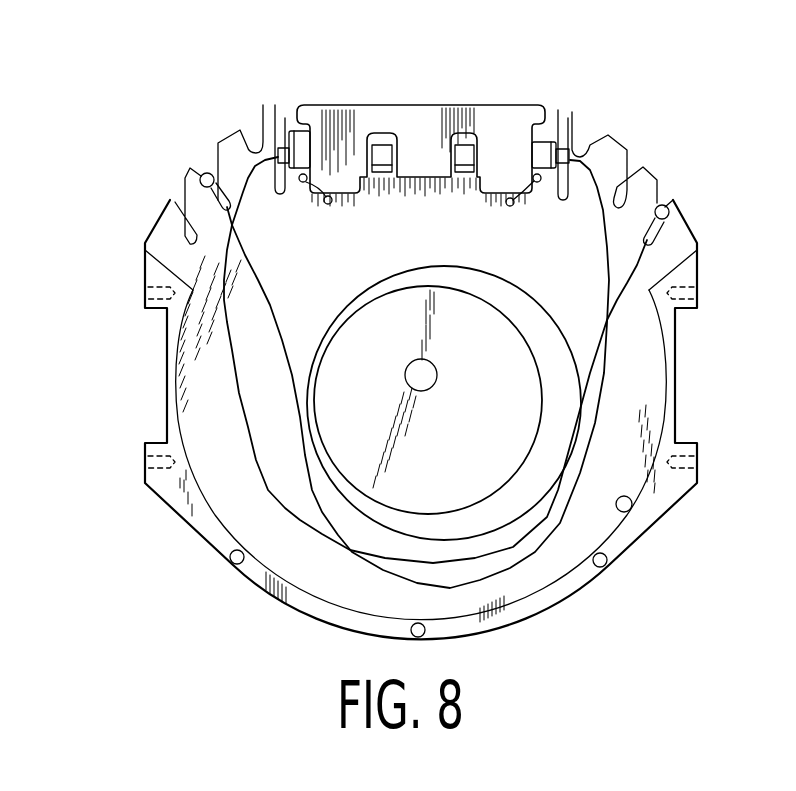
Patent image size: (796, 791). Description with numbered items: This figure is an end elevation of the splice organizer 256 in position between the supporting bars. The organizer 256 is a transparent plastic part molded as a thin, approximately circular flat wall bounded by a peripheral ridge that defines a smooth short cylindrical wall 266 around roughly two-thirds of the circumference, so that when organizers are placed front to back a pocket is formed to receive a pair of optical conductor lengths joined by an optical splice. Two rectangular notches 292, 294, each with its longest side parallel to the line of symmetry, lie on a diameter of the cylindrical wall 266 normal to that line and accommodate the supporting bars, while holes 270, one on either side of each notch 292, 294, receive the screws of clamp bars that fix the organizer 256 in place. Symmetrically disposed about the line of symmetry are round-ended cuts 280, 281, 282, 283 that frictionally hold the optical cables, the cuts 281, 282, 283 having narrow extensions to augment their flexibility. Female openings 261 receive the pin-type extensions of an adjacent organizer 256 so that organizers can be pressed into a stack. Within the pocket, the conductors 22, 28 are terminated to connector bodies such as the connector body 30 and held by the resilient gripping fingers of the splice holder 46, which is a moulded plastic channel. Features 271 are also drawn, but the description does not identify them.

The conductor 22 is at (418, 374).
The conductor 28 is at (597, 212).
The connector body 30 is at (545, 146).
The splice holder 46 is at (468, 106).
The splice organizer 256 is at (240, 621).
The female openings 261 is at (234, 562).
The cylindrical wall 266 is at (623, 512).
The holes 270 is at (148, 292).
The pivot pins 271 is at (302, 183).
The round-ended cut 280 is at (282, 120).
The round-ended cut 281 is at (250, 130).
The round-ended cut 282 is at (205, 165).
The round-ended cut 283 is at (186, 212).
The notch 292 is at (166, 380).
The notch 294 is at (679, 410).